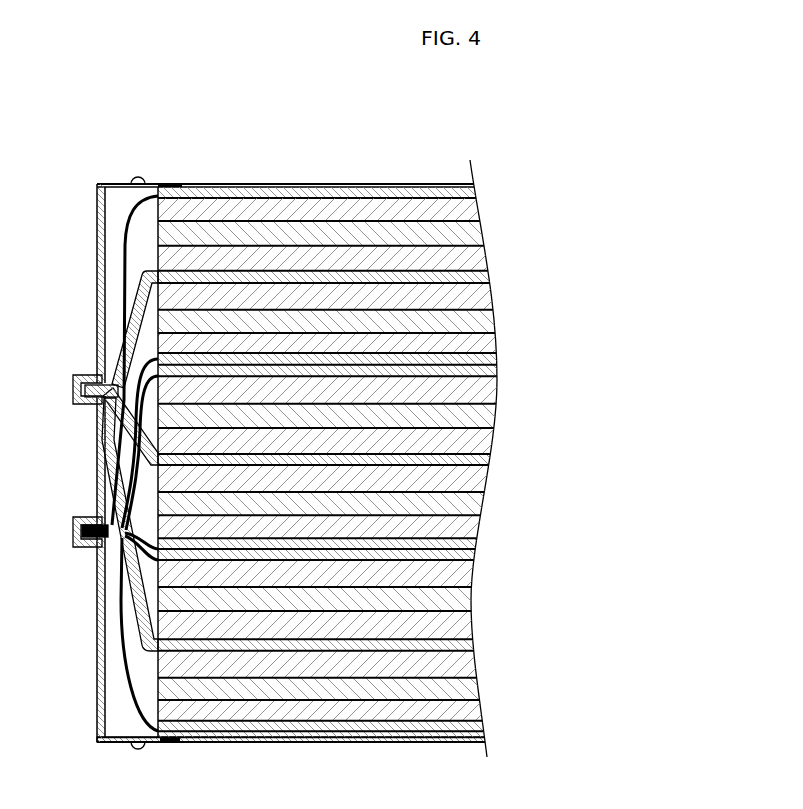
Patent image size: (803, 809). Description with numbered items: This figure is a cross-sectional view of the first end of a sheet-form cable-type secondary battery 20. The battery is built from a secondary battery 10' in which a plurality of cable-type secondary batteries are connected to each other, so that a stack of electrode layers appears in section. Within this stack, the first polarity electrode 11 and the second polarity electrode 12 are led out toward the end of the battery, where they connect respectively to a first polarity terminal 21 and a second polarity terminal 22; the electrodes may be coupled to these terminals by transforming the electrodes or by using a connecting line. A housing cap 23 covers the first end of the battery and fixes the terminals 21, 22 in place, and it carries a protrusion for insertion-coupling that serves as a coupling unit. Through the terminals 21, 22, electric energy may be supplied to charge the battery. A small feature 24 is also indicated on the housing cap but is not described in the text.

The cable-type secondary battery 20 is at (329, 412).
The secondary battery 10' is at (329, 170).
The first polarity electrode 11 is at (136, 325).
The second polarity electrode 12 is at (125, 243).
The first polarity terminal 21 is at (73, 389).
The second polarity terminal 22 is at (73, 531).
The housing cap 23 is at (100, 743).
The vent protrusion 24 is at (138, 748).